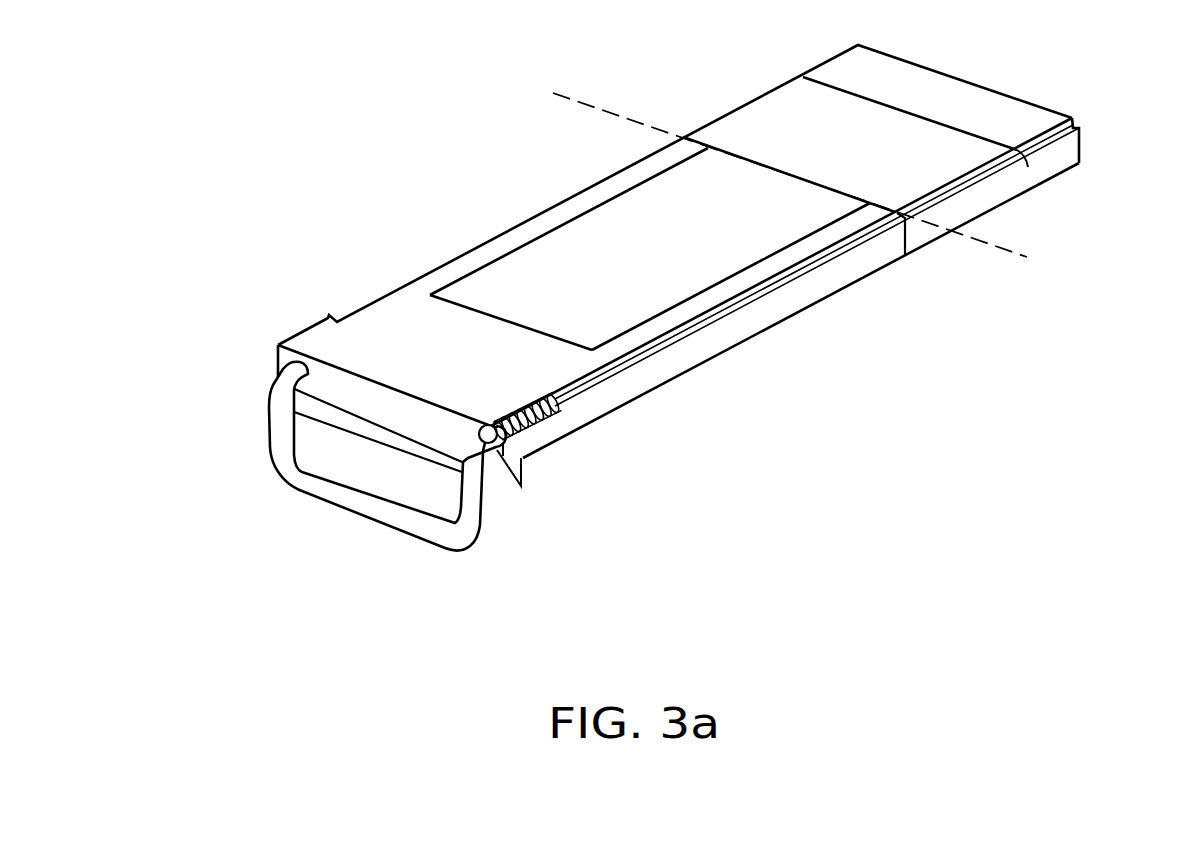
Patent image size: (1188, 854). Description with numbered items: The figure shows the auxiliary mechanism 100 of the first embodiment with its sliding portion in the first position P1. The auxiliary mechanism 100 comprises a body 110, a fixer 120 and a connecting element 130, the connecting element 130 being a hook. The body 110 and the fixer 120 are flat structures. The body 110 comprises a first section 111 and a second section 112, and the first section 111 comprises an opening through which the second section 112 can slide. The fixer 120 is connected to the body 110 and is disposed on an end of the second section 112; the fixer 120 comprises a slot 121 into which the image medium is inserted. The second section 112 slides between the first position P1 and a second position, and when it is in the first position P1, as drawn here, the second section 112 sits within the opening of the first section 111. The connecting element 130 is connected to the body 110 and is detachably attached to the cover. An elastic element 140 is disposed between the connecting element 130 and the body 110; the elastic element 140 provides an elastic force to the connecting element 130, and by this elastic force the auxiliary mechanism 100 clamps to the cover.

The auxiliary mechanism 100 is at (214, 108).
The first position P1 is at (430, 293).
The body 110 is at (678, 265).
The first section 111 is at (950, 324).
The second section 112 is at (768, 223).
The fixer 120 is at (981, 131).
The slot 121 is at (980, 137).
The connecting element 130 is at (473, 498).
The elastic element 140 is at (555, 427).